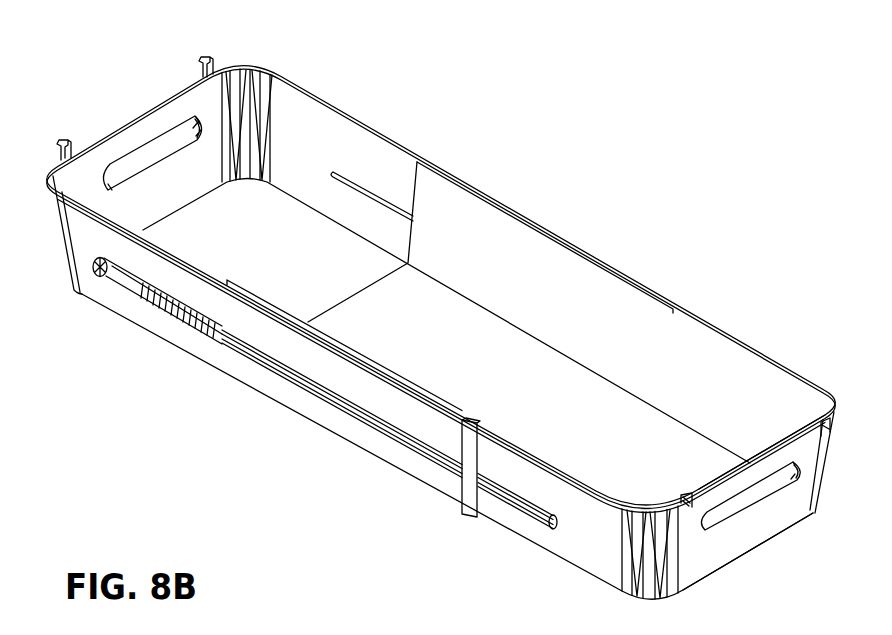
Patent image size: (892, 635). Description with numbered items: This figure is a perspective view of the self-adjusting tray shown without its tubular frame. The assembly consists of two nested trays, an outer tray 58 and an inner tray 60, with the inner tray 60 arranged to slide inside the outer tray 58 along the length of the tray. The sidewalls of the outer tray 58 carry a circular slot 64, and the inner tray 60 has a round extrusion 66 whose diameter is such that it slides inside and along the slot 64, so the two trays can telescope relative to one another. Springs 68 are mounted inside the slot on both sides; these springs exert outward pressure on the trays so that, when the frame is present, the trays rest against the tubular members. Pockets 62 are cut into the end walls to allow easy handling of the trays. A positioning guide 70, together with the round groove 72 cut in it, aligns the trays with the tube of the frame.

The outer tray 58 is at (363, 123).
The inner tray 60 is at (777, 363).
The pocket 62 is at (150, 165).
The circular slot 64 is at (390, 440).
The round extrusion 66 is at (520, 513).
The spring 68 is at (203, 327).
The positioning guide 70 is at (66, 140).
The round groove 72 is at (195, 76).